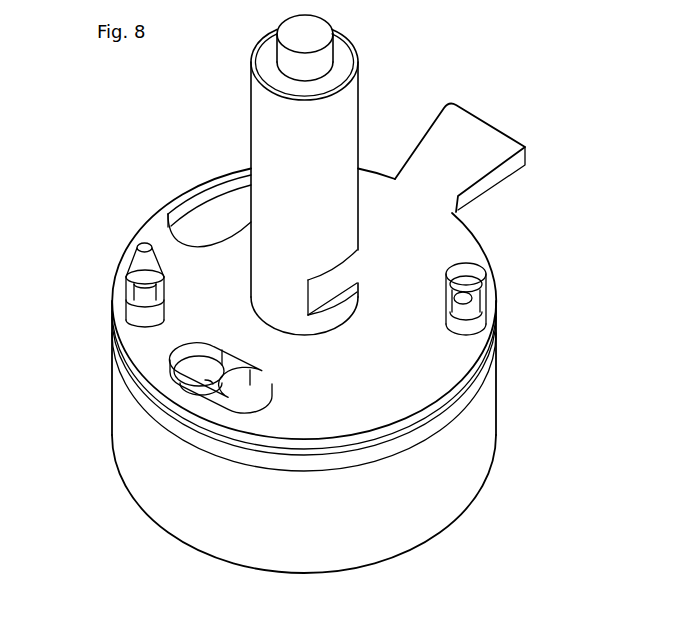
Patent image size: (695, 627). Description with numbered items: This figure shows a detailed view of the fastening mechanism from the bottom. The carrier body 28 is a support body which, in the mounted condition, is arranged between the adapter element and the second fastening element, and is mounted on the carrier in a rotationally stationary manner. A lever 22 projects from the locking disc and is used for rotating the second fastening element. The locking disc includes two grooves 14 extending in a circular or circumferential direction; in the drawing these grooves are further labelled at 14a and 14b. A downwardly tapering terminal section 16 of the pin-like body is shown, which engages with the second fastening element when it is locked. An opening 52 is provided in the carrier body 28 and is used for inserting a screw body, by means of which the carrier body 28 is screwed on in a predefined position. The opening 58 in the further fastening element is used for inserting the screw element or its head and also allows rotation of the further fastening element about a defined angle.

The grooves 14 is at (317, 336).
The post neck 14a is at (133, 322).
The post tapered head 14b is at (138, 300).
The downwardly tapering terminal section 16 is at (141, 256).
The lever 22 is at (453, 143).
The carrier body 28 is at (447, 417).
The opening 52 is at (207, 378).
The opening 58 is at (319, 461).